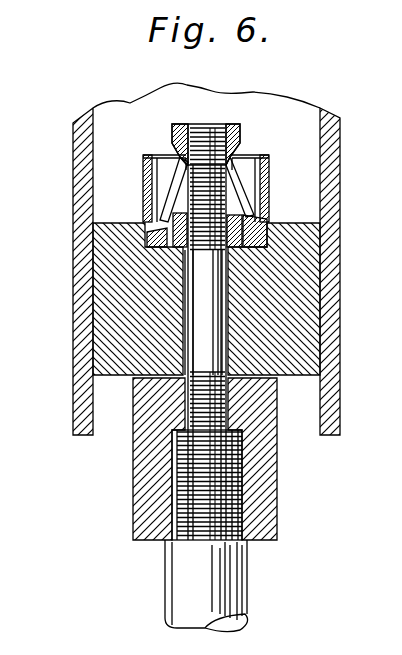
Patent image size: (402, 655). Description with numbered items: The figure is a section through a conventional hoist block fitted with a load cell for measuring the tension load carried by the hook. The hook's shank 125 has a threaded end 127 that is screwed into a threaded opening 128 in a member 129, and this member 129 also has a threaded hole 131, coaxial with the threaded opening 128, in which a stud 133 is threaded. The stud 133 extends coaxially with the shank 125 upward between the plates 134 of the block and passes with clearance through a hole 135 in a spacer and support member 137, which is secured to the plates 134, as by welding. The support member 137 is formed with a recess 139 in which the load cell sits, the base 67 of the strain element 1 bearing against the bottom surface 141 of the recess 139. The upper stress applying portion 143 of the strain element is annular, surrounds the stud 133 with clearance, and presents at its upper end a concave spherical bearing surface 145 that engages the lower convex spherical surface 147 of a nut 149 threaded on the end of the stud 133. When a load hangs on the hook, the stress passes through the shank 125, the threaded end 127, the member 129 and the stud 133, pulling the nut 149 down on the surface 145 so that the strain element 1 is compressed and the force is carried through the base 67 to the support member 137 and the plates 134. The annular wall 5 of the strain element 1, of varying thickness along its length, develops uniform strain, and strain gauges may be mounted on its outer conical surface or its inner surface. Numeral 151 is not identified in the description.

The strain element 1 is at (248, 191).
The annular wall 5 is at (143, 187).
The base 67 is at (270, 190).
The shank 125 is at (172, 579).
The threaded end 127 is at (243, 500).
The threaded opening 128 is at (172, 490).
The member 129 is at (270, 446).
The threaded hole 131 is at (258, 406).
The stud 133 is at (216, 124).
The plates 134 is at (73, 272).
The hole 135 is at (228, 340).
The spacer and support member 137 is at (305, 243).
The recess 139 is at (284, 224).
The bottom surface 141 is at (168, 232).
The upper stress applying portion 143 is at (242, 153).
The concave spherical bearing surface 145 is at (172, 142).
The lower convex spherical surface 147 is at (143, 153).
The nut 149 is at (177, 124).
The right spring cone 151 is at (263, 176).